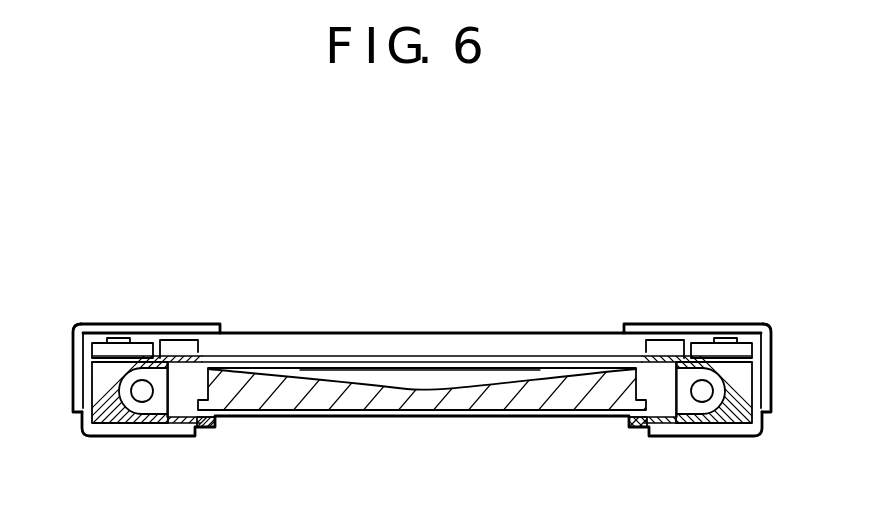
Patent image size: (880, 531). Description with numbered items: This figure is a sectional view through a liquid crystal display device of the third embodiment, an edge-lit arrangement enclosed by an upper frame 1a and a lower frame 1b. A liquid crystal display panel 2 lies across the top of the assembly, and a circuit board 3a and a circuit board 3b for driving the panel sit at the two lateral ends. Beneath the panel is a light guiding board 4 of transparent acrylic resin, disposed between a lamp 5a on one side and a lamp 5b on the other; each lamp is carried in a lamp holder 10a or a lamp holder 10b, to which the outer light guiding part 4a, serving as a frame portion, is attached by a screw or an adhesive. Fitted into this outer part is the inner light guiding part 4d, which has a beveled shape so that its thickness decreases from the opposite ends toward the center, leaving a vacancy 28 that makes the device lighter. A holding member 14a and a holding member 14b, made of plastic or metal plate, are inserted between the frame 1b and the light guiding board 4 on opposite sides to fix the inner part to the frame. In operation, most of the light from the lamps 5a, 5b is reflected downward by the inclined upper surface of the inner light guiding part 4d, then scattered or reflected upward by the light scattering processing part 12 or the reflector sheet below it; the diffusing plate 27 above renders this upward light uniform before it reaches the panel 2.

The frame 1a is at (179, 330).
The frame 1b is at (158, 436).
The liquid crystal display panel 2 is at (580, 352).
The circuit board 3a is at (103, 352).
The circuit board 3b is at (742, 352).
The light guiding board 4 is at (489, 402).
The outer light guiding part 4a is at (192, 380).
The inner light guiding part 4d is at (549, 403).
The lamp 5a is at (142, 392).
The lamp 5b is at (702, 392).
The lamp holder 10a is at (88, 414).
The lamp holder 10b is at (746, 370).
The light scattering processing part 12 is at (407, 417).
The holding member 14a is at (204, 427).
The holding member 14b is at (640, 428).
The diffusing plate 27 is at (390, 366).
The vacancy 28 is at (474, 382).